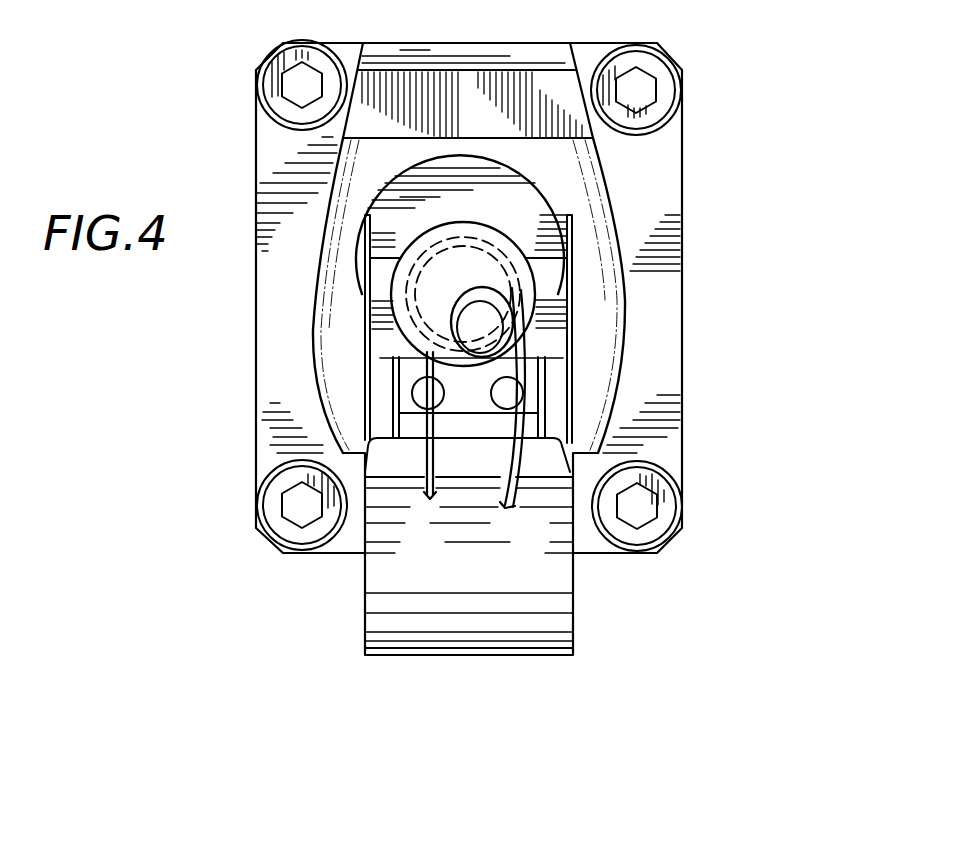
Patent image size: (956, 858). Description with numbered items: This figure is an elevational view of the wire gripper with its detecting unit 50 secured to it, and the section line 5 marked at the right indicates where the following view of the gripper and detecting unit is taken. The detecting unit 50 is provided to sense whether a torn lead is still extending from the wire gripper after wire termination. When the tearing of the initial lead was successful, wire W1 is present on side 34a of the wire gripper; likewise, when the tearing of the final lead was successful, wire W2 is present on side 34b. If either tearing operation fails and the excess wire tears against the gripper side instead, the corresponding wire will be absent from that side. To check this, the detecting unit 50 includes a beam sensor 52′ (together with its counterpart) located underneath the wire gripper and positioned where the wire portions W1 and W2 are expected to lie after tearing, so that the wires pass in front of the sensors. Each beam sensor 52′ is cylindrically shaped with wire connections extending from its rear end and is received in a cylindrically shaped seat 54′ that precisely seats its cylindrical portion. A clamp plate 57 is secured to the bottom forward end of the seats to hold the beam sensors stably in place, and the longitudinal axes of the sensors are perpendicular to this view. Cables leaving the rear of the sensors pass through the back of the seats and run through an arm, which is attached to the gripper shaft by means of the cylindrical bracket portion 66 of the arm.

The detecting unit 50 is at (350, 567).
The clamp plate 57 is at (608, 420).
The cylindrical bracket portion 66 is at (552, 204).
The side of wire gripper 34a is at (552, 273).
The side of wire gripper 34b is at (414, 369).
The seat 54′ is at (548, 373).
The beam sensor 52′ is at (524, 402).
The wire W1 is at (540, 497).
The wire W2 is at (412, 490).
The section line 5 is at (847, 23).